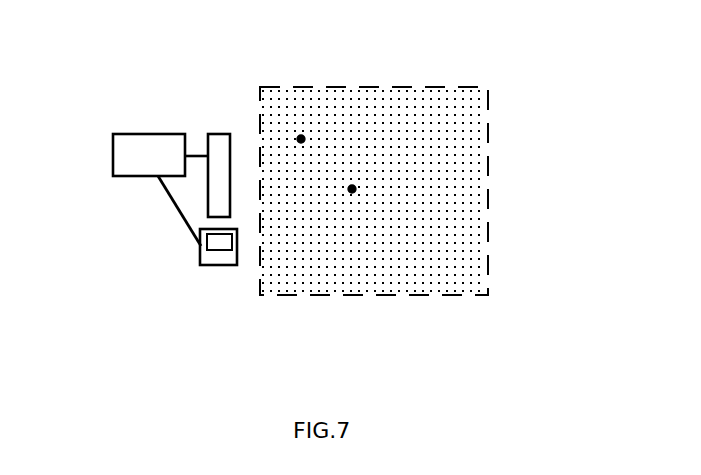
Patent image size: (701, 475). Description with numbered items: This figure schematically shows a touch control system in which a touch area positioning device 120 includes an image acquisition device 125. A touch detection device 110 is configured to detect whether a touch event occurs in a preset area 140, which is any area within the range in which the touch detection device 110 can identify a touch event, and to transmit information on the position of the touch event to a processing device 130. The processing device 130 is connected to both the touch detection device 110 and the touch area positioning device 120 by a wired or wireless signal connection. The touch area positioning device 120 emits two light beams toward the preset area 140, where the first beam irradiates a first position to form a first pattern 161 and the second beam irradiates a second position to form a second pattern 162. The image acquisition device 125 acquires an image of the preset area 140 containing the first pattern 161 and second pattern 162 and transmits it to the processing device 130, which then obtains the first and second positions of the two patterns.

The touch detection device 110 is at (219, 145).
The touch area positioning device 120 is at (205, 262).
The image acquisition device 125 is at (221, 245).
The processing device 130 is at (142, 154).
The preset area 140 is at (461, 268).
The first pattern 161 is at (353, 187).
The second pattern 162 is at (302, 137).